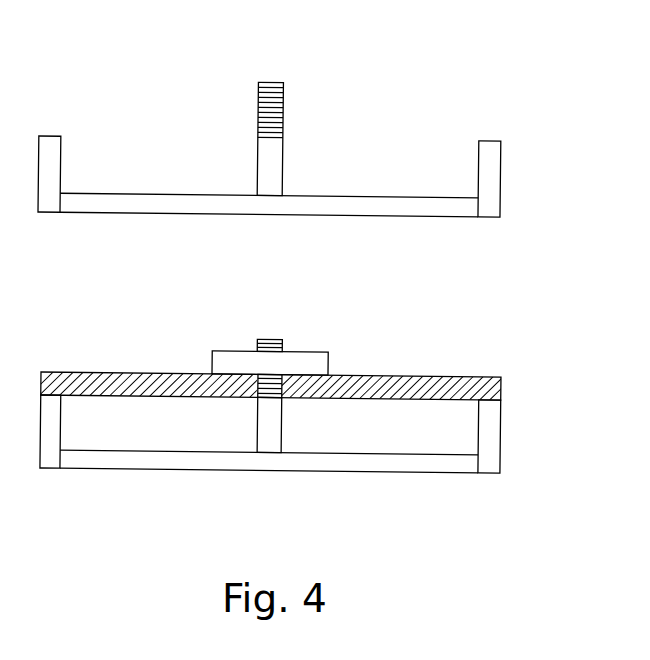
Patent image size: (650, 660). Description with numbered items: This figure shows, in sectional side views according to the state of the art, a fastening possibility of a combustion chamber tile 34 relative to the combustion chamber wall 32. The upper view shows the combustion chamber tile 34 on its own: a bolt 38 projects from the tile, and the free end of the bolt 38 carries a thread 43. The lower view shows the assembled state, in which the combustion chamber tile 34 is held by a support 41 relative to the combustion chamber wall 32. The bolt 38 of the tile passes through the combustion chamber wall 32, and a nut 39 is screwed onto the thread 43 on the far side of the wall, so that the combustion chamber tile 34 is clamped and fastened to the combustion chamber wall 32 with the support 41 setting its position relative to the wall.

The combustion chamber wall 32 is at (137, 375).
The combustion chamber tile 34 is at (376, 203).
The bolt 38 is at (264, 158).
The nut 39 is at (308, 362).
The support 41 is at (491, 437).
The thread 43 is at (265, 80).